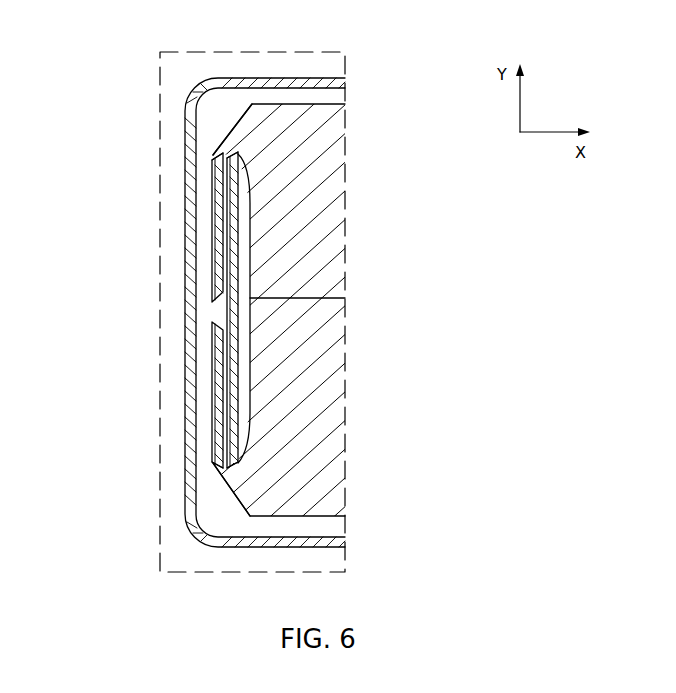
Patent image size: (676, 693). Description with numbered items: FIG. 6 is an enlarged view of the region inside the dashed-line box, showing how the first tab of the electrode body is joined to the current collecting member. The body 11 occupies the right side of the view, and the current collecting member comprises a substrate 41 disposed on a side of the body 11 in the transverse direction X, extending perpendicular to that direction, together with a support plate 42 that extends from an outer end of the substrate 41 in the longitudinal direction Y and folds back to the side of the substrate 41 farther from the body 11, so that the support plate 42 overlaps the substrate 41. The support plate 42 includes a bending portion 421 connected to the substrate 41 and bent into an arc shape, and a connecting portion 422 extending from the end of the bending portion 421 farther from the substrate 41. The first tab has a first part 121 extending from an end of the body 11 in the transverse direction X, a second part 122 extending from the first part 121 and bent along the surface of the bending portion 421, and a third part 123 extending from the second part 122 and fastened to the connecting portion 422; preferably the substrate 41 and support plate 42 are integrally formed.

The body 11 is at (335, 212).
The first part 121 is at (248, 126).
The second part 122 is at (217, 150).
The third part 123 is at (212, 220).
The substrate 41 is at (230, 312).
The support plate 42 is at (152, 334).
The bending portion 421 is at (240, 457).
The connecting portion 422 is at (230, 432).